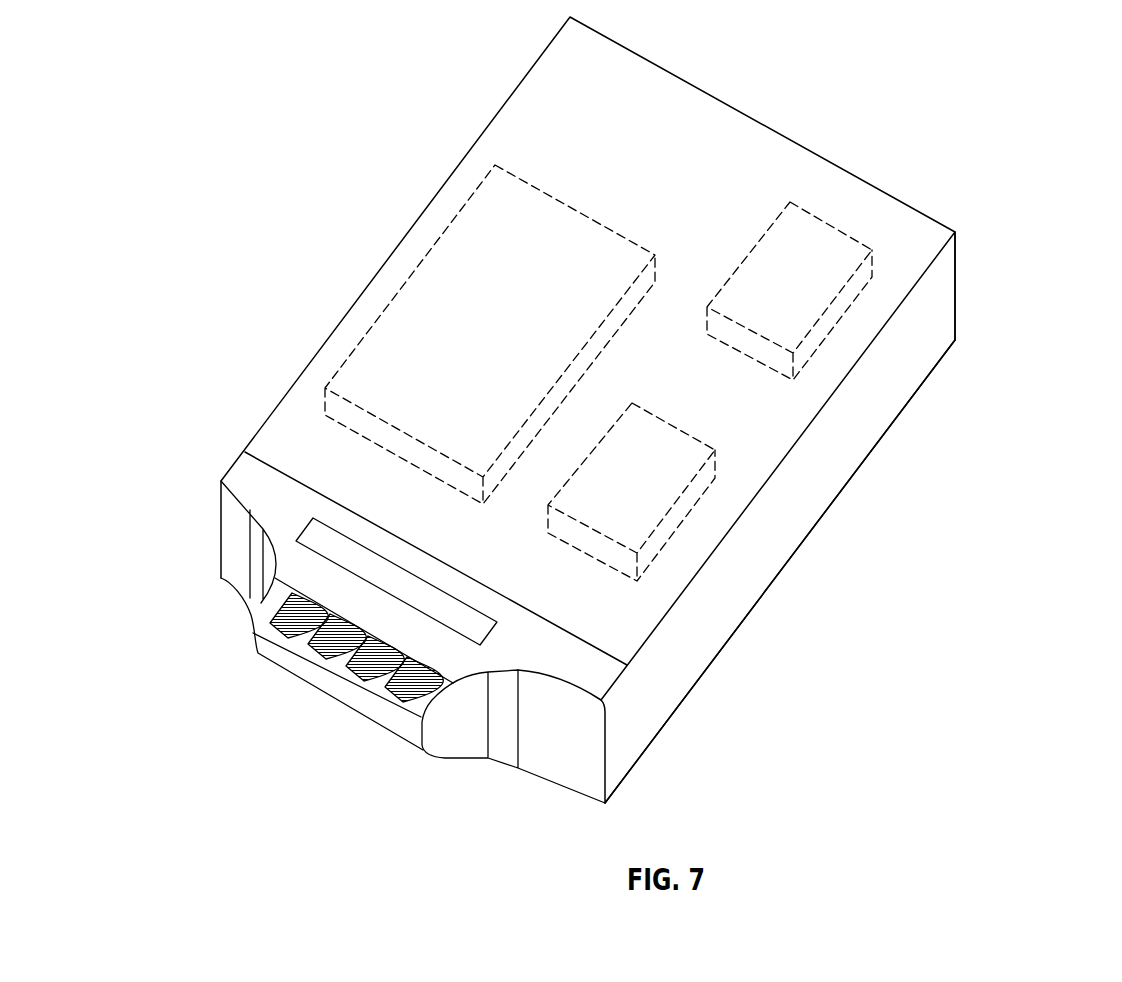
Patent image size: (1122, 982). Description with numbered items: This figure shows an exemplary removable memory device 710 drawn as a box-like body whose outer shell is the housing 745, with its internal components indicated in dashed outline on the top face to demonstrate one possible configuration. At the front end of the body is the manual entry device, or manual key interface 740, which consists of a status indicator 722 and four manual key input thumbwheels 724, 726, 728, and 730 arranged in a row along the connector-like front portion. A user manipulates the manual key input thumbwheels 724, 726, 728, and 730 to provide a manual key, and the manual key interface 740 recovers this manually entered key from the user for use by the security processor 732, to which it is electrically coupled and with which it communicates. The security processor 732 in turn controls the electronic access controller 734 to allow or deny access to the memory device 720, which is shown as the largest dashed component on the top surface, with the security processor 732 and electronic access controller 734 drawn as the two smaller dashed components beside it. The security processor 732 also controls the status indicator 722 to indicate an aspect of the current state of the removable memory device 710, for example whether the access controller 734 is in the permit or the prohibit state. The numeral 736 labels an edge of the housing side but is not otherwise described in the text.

The removable memory device 710 is at (350, 184).
The memory device 720 is at (448, 328).
The status indicator 722 is at (387, 568).
The manual key input thumbwheel 724 is at (320, 647).
The manual key input thumbwheel 726 is at (398, 690).
The manual key input thumbwheel 728 is at (259, 655).
The manual key input thumbwheel 730 is at (360, 663).
The security processor 732 is at (653, 499).
The electronic access controller 734 is at (807, 304).
The housing 736 is at (957, 277).
The manual key interface 740 is at (203, 606).
The housing 745 is at (820, 446).